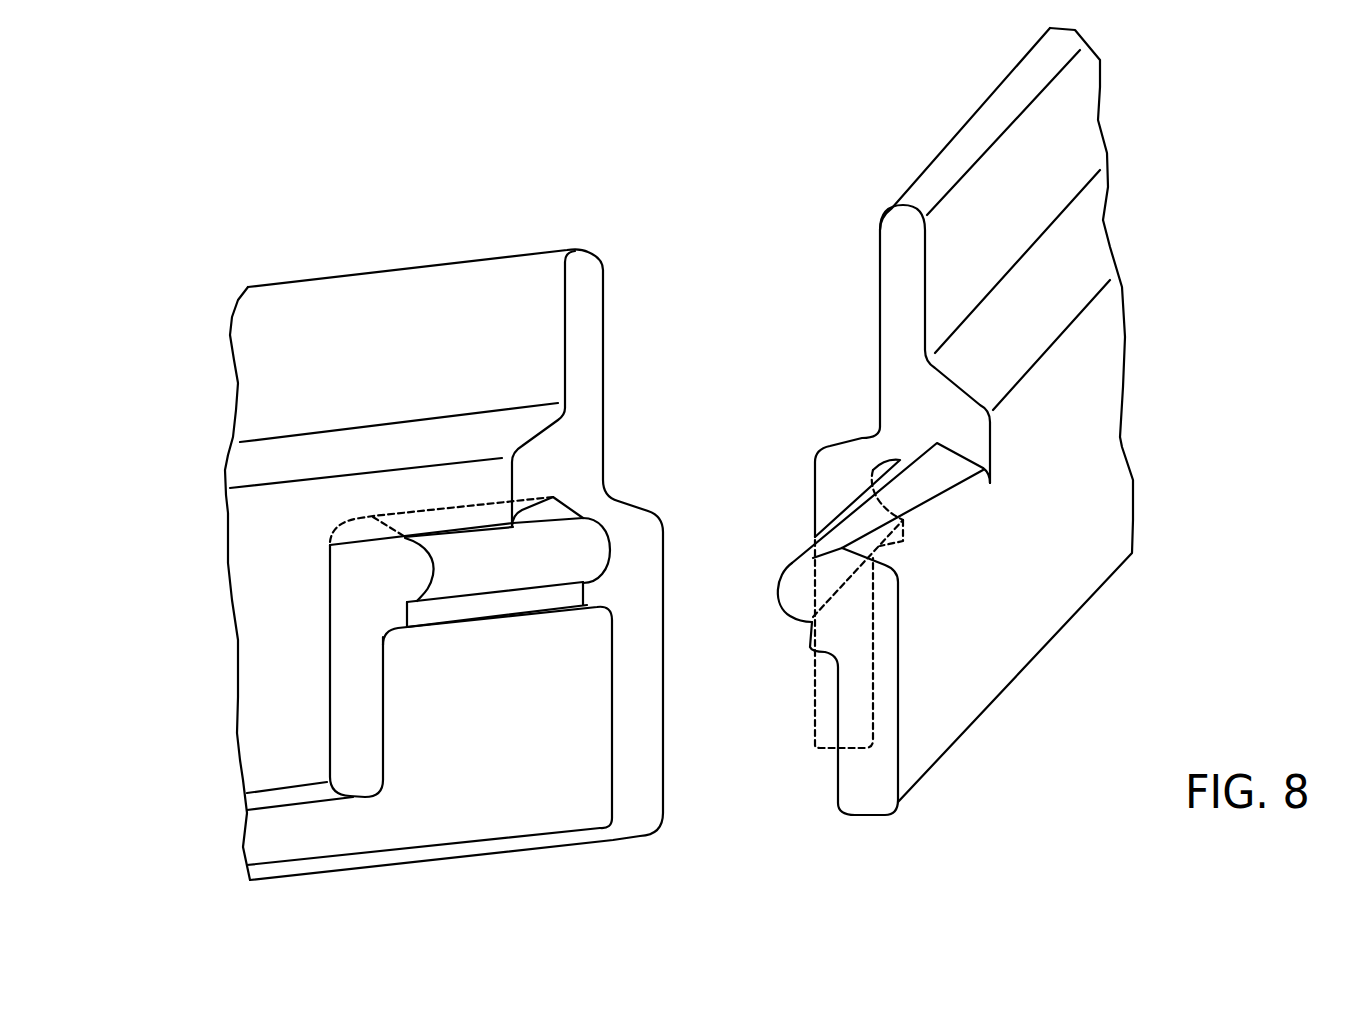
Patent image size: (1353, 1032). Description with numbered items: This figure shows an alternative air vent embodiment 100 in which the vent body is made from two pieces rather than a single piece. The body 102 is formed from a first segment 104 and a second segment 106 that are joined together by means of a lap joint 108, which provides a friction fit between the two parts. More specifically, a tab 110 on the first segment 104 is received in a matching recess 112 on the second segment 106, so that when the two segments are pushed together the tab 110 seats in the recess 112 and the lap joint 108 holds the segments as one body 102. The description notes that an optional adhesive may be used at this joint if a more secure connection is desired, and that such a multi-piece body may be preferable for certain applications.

The air vent embodiment 100 is at (427, 133).
The body 102 is at (895, 349).
The first segment 104 is at (1087, 272).
The second segment 106 is at (250, 538).
The lap joint 108 is at (875, 873).
The tab 110 is at (857, 783).
The recess 112 is at (450, 668).